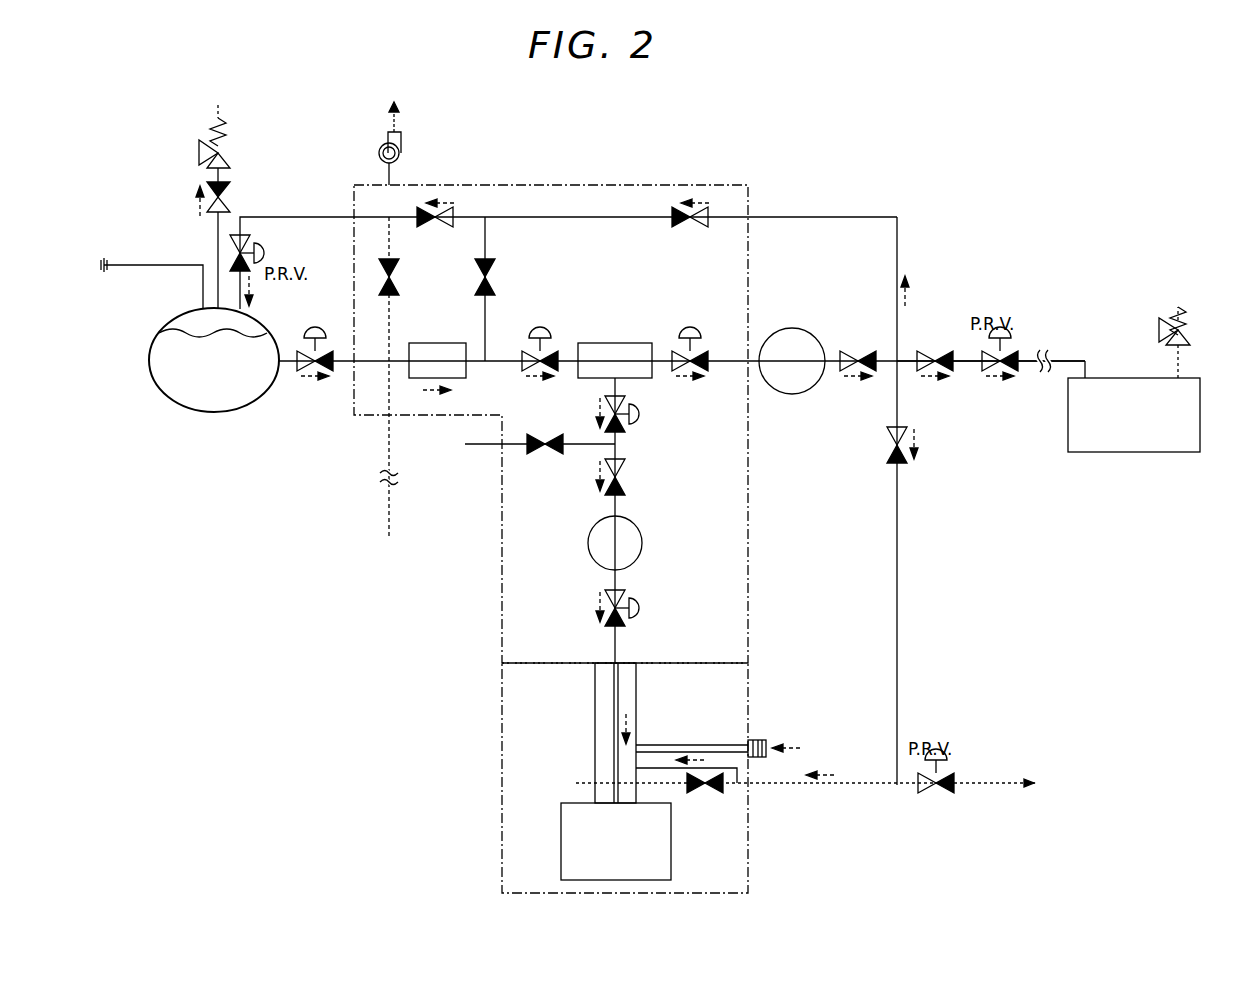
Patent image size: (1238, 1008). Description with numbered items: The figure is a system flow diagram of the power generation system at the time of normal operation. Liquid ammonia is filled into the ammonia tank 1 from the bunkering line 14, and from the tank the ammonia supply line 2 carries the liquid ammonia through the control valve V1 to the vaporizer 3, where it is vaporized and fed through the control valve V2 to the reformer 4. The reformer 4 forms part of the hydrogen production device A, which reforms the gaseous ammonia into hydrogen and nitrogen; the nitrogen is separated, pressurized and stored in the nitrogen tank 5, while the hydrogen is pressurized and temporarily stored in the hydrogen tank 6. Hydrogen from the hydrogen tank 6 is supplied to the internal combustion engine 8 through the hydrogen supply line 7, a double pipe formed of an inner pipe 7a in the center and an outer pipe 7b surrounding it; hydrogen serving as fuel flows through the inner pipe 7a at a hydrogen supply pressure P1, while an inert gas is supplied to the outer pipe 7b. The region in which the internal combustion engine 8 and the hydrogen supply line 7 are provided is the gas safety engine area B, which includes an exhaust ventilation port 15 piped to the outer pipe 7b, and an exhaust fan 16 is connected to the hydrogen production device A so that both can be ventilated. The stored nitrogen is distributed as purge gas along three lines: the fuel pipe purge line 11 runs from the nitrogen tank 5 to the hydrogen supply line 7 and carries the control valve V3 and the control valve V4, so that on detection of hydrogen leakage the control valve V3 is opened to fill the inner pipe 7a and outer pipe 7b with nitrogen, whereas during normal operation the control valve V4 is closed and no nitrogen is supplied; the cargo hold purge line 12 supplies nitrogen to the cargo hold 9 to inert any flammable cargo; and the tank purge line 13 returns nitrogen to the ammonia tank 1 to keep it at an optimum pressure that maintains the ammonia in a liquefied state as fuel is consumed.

The ammonia tank 1 is at (258, 408).
The ammonia supply line 2 is at (293, 370).
The vaporizer 3 is at (438, 343).
The reformer 4 is at (615, 343).
The nitrogen tank 5 is at (792, 328).
The hydrogen tank 6 is at (642, 543).
The hydrogen supply line 7 is at (573, 733).
The inner pipe 7a is at (616, 775).
The outer pipe 7b is at (604, 753).
The internal combustion engine 8 is at (671, 850).
The cargo hold 9 is at (1115, 378).
The fuel pipe purge line 11 is at (897, 588).
The cargo hold purge line 12 is at (964, 358).
The tank purge line 13 is at (297, 217).
The bunkering line 14 is at (136, 270).
The ventilation port 15 is at (766, 745).
The exhaust fan 16 is at (400, 150).
The control valve V1 is at (332, 349).
The control valve V2 is at (556, 349).
The control valve V3 is at (708, 795).
The control valve V4 is at (887, 440).
The hydrogen supply pressure P1 is at (622, 658).
The hydrogen production device A is at (748, 623).
The gas safety engine area B is at (748, 818).